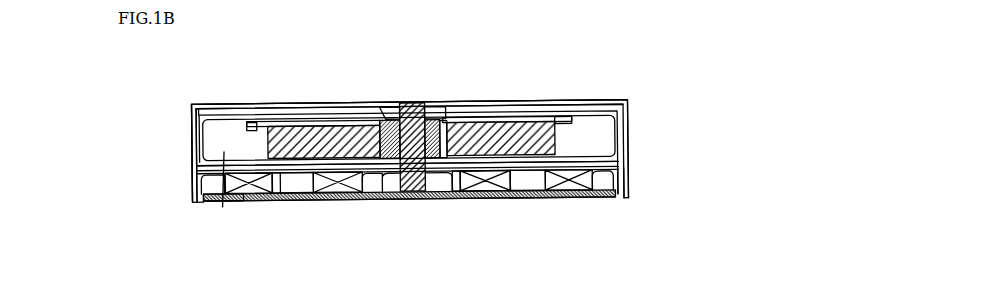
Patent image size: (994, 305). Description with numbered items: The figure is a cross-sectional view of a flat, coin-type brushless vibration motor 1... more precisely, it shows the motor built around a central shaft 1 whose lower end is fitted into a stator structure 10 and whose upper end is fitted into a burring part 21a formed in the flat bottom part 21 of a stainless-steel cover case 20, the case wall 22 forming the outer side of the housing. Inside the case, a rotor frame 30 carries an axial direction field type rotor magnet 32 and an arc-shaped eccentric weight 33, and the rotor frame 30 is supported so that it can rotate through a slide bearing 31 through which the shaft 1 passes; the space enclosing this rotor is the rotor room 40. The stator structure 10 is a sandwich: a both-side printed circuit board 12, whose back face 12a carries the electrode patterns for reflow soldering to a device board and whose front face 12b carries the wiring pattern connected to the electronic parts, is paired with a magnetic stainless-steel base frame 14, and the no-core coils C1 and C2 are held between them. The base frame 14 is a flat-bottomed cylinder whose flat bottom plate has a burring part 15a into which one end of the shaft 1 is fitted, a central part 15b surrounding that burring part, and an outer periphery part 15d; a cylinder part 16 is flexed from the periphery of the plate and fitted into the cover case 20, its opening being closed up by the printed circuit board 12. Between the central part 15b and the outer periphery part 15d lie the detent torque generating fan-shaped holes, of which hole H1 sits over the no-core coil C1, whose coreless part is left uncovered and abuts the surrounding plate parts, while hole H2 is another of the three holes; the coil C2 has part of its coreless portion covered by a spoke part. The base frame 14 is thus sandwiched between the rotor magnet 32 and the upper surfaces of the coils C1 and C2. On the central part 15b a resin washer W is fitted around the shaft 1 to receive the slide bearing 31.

The shaft 1 is at (373, 105).
The stator structure 10 is at (768, 245).
The both-side printed circuit board 12 is at (597, 199).
The back face 12a is at (222, 205).
The front face 12b is at (207, 182).
The base frame 14 is at (600, 160).
The burring part 15a is at (447, 175).
The central part 15b is at (388, 195).
The outer periphery part 15d is at (224, 170).
The cylinder part 16 is at (622, 189).
The cover case 20 is at (633, 120).
The flat bottom part 21 is at (283, 106).
The burring part 21a is at (408, 106).
The side wall 22 is at (192, 145).
The rotor frame 30 is at (553, 115).
The slide bearing 31 is at (452, 108).
The rotor magnet 32 is at (507, 133).
The eccentric weight 33 is at (598, 141).
The rotor room 40 is at (600, 110).
The resin washer W is at (457, 177).
The detent torque generating fan-shaped hole H1 is at (480, 171).
The detent torque generating fan-shaped hole H2 is at (270, 174).
The no-core coil C1 is at (567, 187).
The no-core coil C2 is at (340, 190).